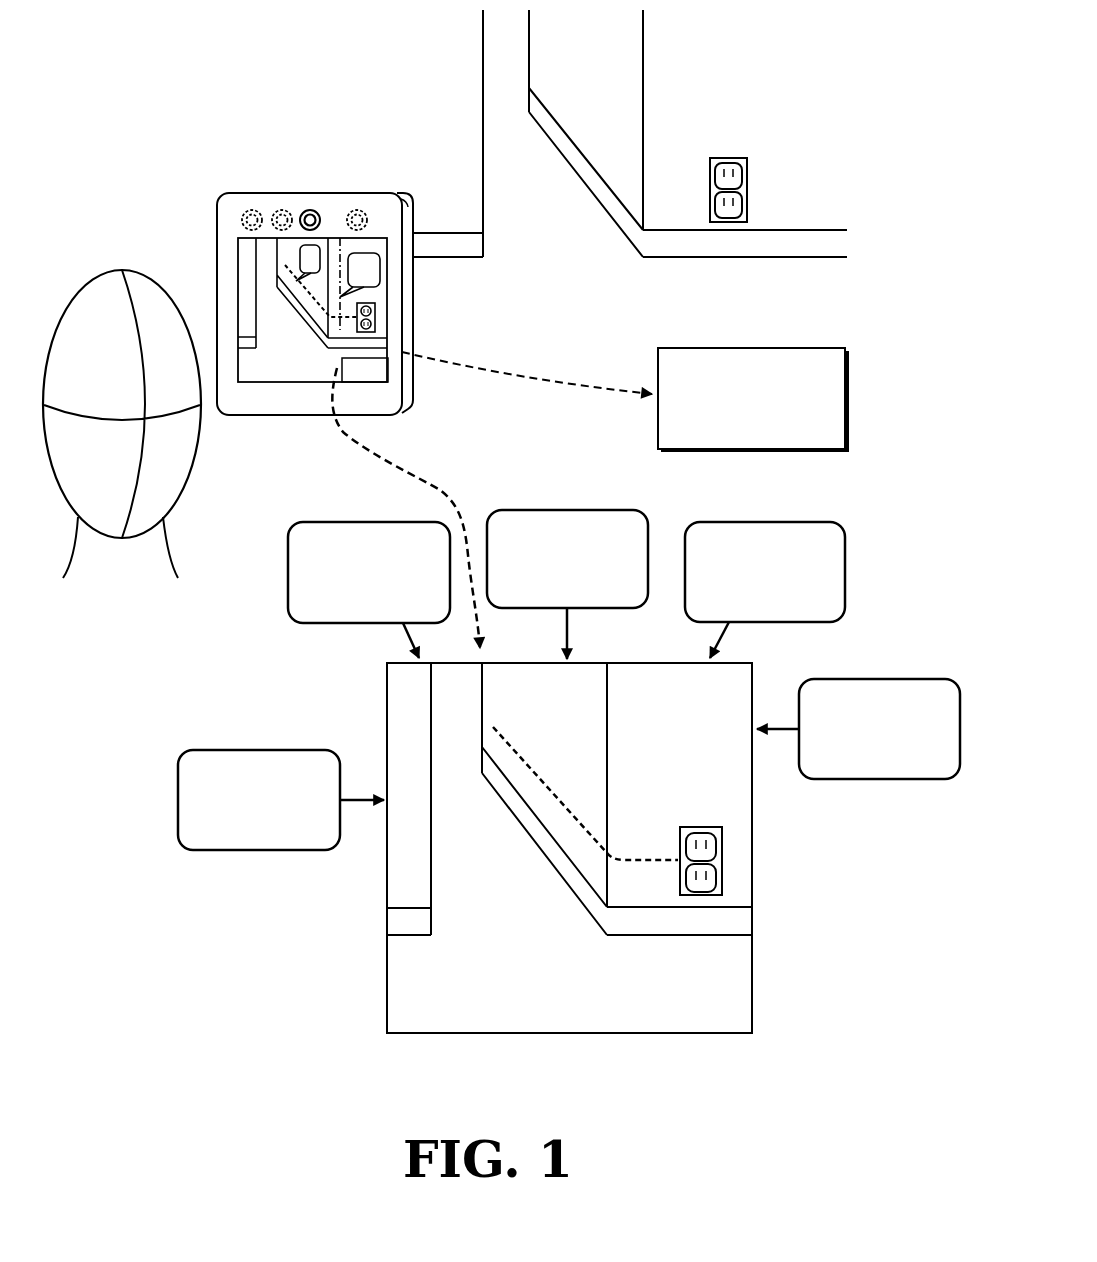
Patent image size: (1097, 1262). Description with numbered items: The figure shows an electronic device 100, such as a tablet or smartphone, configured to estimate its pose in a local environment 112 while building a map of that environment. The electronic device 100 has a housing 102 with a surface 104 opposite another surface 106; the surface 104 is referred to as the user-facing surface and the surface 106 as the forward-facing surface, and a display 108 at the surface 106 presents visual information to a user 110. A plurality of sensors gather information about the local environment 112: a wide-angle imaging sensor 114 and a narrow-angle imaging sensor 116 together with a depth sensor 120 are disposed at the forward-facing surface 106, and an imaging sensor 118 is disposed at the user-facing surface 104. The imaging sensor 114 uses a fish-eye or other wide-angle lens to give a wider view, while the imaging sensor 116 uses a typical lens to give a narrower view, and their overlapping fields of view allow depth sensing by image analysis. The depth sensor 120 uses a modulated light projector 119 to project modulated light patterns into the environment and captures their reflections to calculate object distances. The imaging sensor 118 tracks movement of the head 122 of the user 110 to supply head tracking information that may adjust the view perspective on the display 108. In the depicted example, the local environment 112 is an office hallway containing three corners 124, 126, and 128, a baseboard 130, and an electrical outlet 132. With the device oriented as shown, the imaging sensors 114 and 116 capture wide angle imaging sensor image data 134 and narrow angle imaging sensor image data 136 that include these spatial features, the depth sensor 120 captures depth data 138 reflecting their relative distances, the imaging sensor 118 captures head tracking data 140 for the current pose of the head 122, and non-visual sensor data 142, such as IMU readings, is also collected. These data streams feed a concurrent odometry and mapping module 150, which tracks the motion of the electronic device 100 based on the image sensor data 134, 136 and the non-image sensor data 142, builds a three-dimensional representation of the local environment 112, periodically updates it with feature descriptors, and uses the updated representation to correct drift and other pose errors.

The electronic device 100 is at (319, 298).
The housing 102 is at (412, 318).
The surface 104 is at (283, 406).
The surface 106 is at (421, 398).
The display 108 is at (353, 380).
The user 110 is at (122, 428).
The local environment 112 is at (617, 472).
The wide-angle imaging sensor 114 is at (243, 213).
The narrow-angle imaging sensor 116 is at (366, 211).
The imaging sensor 118 is at (319, 211).
The modulated light projector 119 is at (288, 211).
The depth sensor 120 is at (269, 206).
The head 122 is at (84, 289).
The corner 124 is at (483, 215).
The corner 126 is at (643, 90).
The corner 128 is at (529, 53).
The baseboard 130 is at (619, 212).
The electrical outlet 132 is at (747, 188).
The wide angle imaging sensor image data 134 is at (245, 682).
The narrow angle imaging sensor image data 136 is at (365, 522).
The depth data 138 is at (570, 509).
The head tracking data 140 is at (762, 522).
The non-visual sensor data 142 is at (885, 679).
The concurrent odometry and mapping module 150 is at (737, 445).